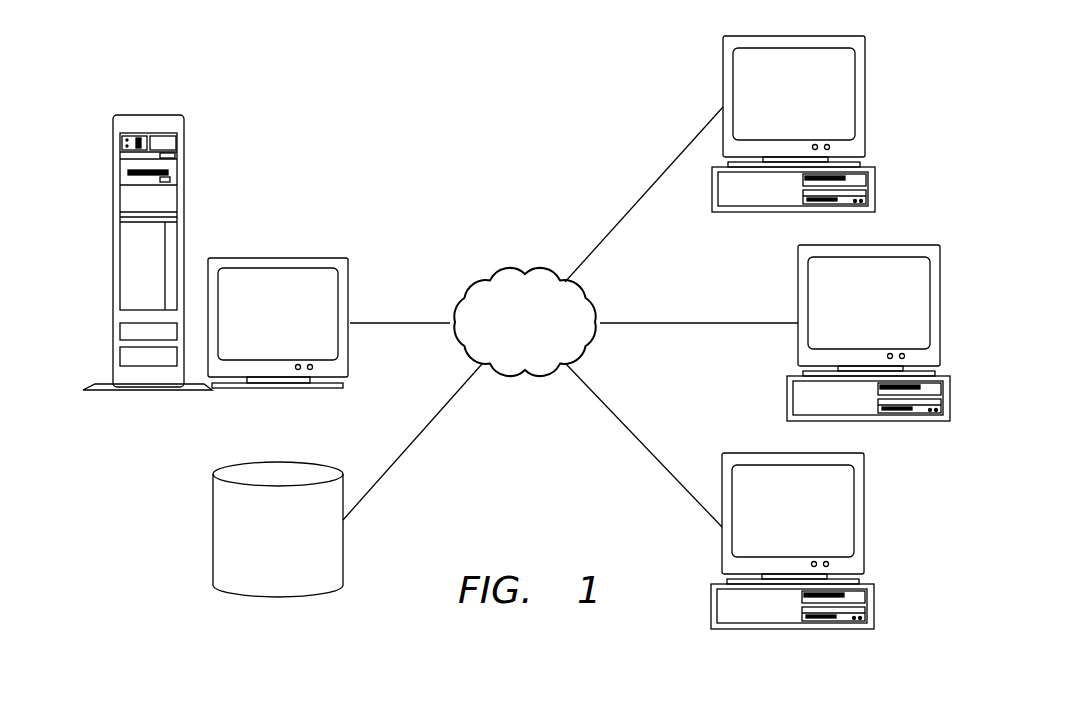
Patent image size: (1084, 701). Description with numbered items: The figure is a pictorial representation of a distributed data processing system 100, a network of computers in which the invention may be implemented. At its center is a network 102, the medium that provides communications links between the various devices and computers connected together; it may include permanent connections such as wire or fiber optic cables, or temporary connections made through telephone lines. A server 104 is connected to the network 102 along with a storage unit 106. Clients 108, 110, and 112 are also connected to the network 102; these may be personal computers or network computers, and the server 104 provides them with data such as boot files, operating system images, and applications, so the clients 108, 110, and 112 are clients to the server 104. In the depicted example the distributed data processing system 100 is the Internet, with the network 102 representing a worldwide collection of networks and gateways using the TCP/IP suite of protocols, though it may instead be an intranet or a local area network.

The distributed data processing system 100 is at (414, 83).
The network 102 is at (506, 335).
The server 104 is at (259, 325).
The storage unit 106 is at (259, 548).
The client 108 is at (776, 105).
The client 110 is at (851, 315).
The client 112 is at (776, 523).